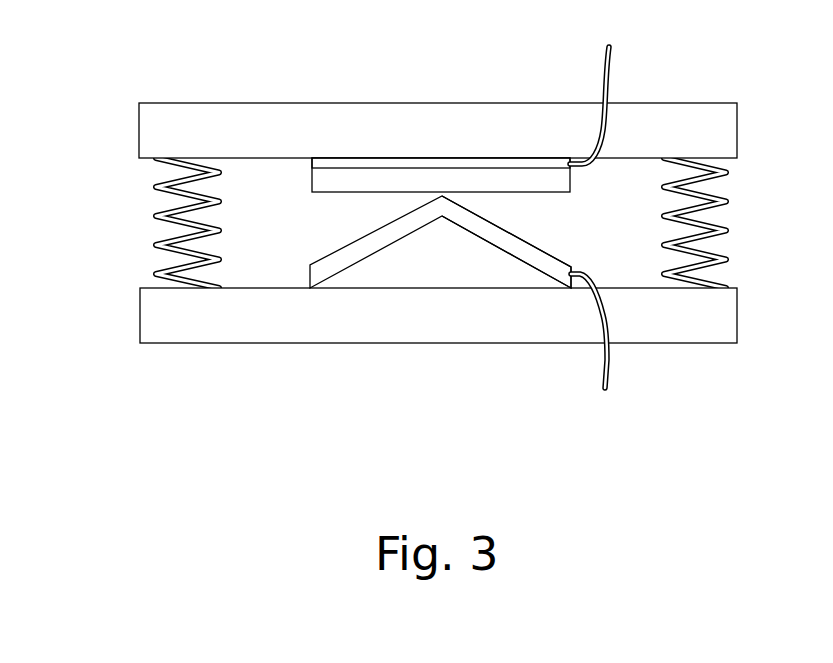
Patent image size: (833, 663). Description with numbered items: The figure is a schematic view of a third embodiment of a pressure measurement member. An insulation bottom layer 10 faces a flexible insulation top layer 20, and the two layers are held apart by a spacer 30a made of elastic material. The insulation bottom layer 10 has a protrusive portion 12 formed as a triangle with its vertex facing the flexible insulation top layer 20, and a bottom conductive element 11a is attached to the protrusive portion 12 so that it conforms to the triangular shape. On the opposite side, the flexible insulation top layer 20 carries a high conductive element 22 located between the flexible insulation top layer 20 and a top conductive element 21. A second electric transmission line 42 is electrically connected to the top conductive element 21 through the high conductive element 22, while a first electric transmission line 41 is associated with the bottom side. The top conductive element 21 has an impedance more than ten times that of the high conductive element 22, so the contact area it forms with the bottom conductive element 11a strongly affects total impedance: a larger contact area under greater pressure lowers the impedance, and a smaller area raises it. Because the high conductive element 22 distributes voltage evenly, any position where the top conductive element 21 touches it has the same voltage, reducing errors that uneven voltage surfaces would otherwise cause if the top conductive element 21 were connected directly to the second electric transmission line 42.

The insulation bottom layer 10 is at (253, 320).
The bottom conductive element 11a is at (496, 238).
The protrusive portion 12 is at (427, 232).
The flexible insulation top layer 20 is at (415, 120).
The top conductive element 21 is at (523, 175).
The high conductive element 22 is at (334, 163).
The spacer 30a is at (156, 217).
The first electric transmission line 41 is at (612, 360).
The second electric transmission line 42 is at (607, 78).